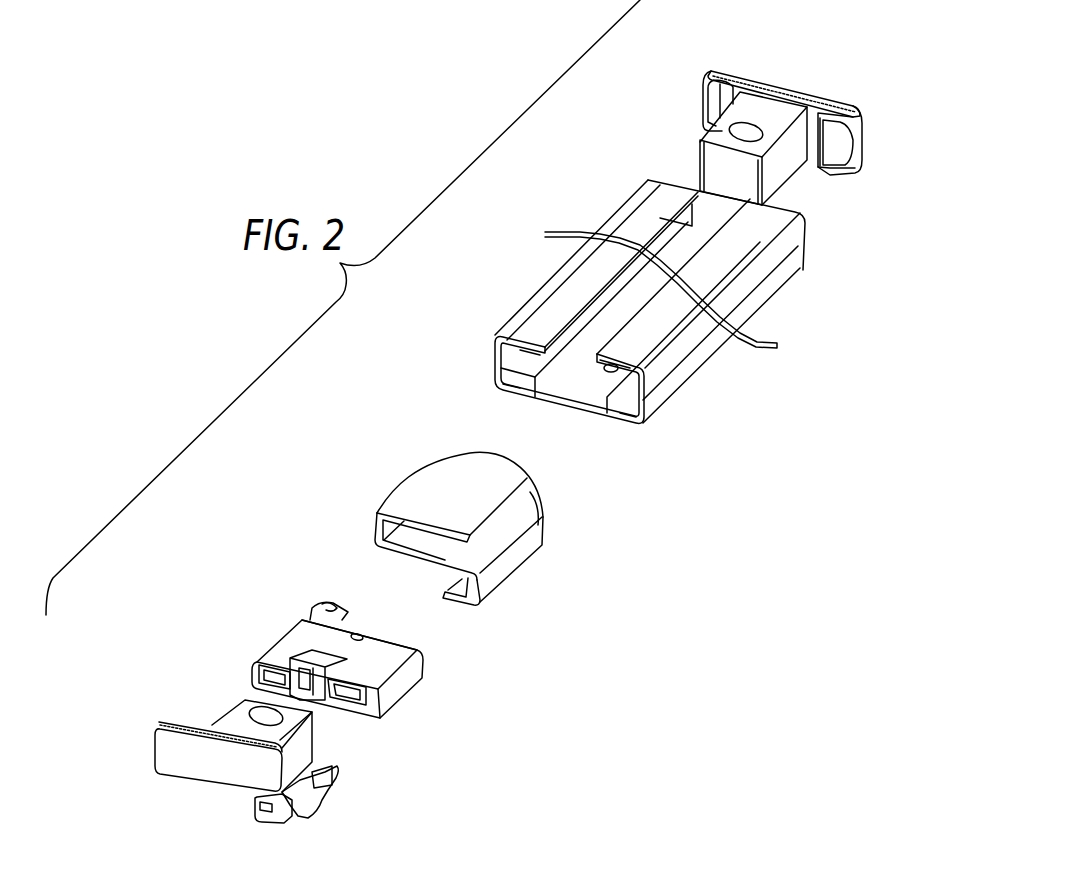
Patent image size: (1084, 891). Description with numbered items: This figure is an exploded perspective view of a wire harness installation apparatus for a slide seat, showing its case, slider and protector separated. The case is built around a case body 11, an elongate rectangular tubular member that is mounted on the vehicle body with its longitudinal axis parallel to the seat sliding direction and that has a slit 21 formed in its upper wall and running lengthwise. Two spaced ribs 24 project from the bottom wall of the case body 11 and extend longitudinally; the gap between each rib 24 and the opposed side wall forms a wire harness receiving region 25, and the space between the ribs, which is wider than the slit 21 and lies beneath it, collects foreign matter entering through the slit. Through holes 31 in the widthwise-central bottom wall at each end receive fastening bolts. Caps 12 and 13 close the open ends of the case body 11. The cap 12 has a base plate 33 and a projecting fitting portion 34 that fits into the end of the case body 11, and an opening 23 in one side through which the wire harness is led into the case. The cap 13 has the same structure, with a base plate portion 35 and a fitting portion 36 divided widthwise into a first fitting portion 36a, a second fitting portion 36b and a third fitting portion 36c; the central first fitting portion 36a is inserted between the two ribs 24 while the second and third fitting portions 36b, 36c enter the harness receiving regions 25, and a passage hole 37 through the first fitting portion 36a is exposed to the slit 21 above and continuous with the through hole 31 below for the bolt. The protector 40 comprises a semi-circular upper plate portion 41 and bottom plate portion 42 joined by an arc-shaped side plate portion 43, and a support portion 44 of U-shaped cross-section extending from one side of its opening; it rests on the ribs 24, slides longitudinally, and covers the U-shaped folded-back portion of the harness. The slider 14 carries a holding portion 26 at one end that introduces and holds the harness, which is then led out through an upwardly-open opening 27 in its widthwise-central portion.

The case body 11 is at (557, 273).
The cap 12 is at (256, 771).
The cap 13 is at (744, 131).
The slider 14 is at (347, 646).
The slit 21 is at (692, 214).
The opening 23 is at (300, 812).
The rib 24 is at (547, 367).
The wire harness receiving region 25 is at (523, 387).
The holding portion 26 is at (317, 607).
The opening 27 is at (310, 660).
The through hole 31 is at (612, 366).
The base plate 33 is at (176, 782).
The fitting portion 34 is at (323, 744).
The base plate portion 35 is at (715, 72).
The fitting portion 36 is at (707, 124).
The first fitting portion 36a is at (710, 165).
The second fitting portion 36b is at (830, 177).
The third fitting portion 36c is at (707, 113).
The passage hole 37 is at (749, 130).
The protector 40 is at (484, 556).
The upper plate portion 41 is at (442, 488).
The bottom plate portion 42 is at (420, 543).
The side plate portion 43 is at (520, 552).
The support portion 44 is at (457, 600).